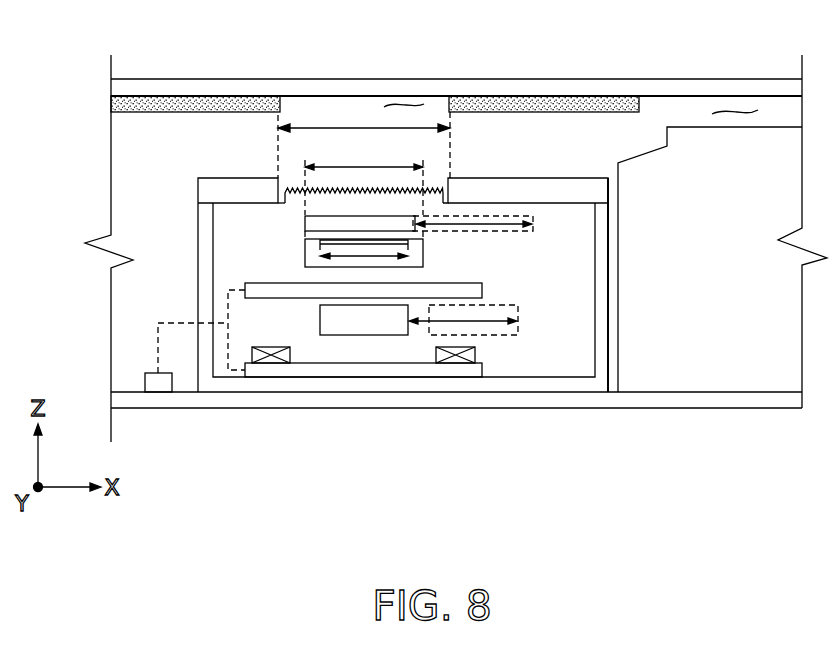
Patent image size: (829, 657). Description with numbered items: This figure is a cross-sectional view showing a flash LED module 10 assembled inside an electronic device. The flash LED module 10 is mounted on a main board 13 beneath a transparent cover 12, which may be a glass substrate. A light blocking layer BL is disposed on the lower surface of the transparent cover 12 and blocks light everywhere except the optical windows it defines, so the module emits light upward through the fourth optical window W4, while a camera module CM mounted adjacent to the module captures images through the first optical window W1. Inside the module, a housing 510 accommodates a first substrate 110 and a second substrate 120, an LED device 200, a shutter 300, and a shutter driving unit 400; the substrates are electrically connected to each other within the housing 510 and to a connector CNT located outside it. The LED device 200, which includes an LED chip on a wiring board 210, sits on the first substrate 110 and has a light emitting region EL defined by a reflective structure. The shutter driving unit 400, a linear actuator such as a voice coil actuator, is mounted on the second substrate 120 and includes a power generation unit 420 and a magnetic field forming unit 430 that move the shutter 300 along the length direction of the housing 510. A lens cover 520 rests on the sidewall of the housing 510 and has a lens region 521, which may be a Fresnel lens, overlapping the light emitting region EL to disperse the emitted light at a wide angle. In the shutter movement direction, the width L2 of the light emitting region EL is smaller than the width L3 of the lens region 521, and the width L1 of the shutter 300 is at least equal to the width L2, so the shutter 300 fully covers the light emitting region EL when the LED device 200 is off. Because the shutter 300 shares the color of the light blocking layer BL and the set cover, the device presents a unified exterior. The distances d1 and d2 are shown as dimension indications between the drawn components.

The flash LED module 10 is at (200, 148).
The transparent cover 12 is at (538, 87).
The main board 13 is at (598, 402).
The first substrate 110 is at (470, 290).
The second substrate 120 is at (268, 370).
The LED device 200 is at (283, 261).
The wiring board 210 is at (313, 277).
The shutter 300 is at (325, 223).
The shutter driving unit 400 is at (397, 405).
The power generation unit 420 is at (350, 320).
The magnetic field forming unit 430 is at (438, 348).
The housing 510 is at (562, 322).
The lens cover 520 is at (572, 193).
The lens region 521 is at (437, 182).
The light blocking layer BL is at (611, 98).
The camera module CM is at (718, 348).
The connector CNT is at (160, 382).
The light emitting region EL is at (317, 239).
The first optical window W1 is at (733, 110).
The fourth optical window W4 is at (405, 100).
The width of the shutter L1 is at (364, 191).
The width of the light emission region L2 is at (384, 257).
The width of the lens region L3 is at (364, 141).
The first distance d1 is at (490, 322).
The second distance d2 is at (518, 224).